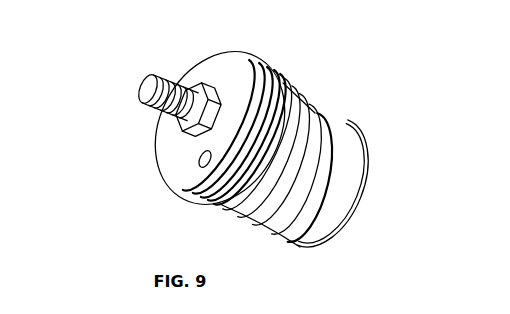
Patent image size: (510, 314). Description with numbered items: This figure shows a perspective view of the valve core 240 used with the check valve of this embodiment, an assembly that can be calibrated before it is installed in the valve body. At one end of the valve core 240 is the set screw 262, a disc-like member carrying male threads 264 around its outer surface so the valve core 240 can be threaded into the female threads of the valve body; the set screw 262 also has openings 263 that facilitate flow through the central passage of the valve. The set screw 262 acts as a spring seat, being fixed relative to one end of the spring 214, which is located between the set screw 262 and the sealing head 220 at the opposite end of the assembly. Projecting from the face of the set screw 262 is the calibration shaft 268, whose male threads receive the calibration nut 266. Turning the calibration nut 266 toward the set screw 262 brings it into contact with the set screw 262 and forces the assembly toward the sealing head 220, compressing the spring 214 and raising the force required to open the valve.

The valve core 240 is at (231, 127).
The set screw 262 is at (168, 163).
The openings 263 is at (199, 163).
The male threads 264 is at (255, 57).
The calibration nut 266 is at (200, 72).
The calibration shaft 268 is at (147, 75).
The spring 214 is at (313, 114).
The sealing head 220 is at (358, 138).